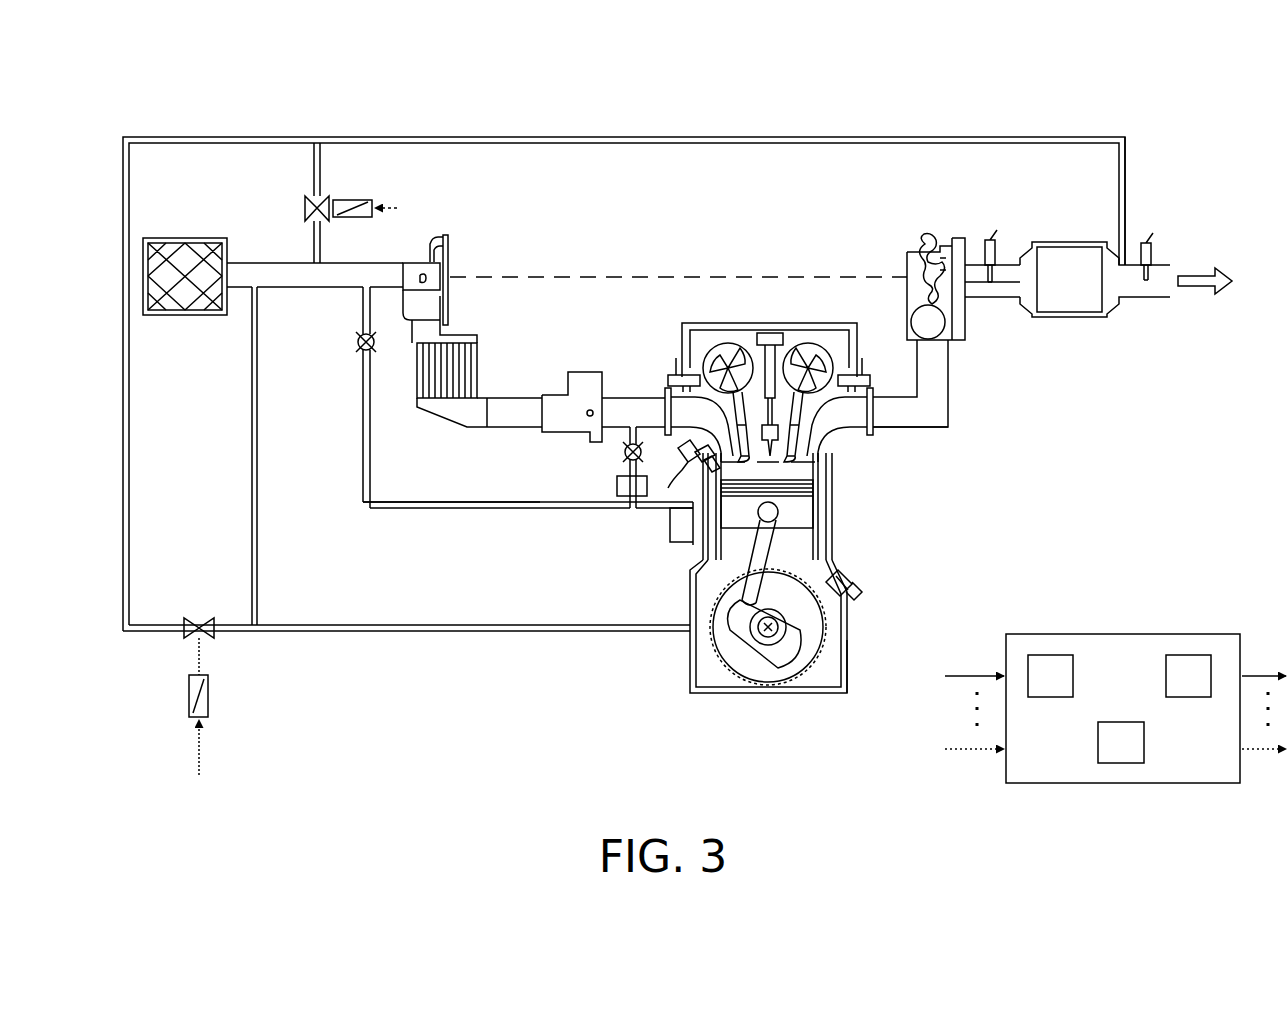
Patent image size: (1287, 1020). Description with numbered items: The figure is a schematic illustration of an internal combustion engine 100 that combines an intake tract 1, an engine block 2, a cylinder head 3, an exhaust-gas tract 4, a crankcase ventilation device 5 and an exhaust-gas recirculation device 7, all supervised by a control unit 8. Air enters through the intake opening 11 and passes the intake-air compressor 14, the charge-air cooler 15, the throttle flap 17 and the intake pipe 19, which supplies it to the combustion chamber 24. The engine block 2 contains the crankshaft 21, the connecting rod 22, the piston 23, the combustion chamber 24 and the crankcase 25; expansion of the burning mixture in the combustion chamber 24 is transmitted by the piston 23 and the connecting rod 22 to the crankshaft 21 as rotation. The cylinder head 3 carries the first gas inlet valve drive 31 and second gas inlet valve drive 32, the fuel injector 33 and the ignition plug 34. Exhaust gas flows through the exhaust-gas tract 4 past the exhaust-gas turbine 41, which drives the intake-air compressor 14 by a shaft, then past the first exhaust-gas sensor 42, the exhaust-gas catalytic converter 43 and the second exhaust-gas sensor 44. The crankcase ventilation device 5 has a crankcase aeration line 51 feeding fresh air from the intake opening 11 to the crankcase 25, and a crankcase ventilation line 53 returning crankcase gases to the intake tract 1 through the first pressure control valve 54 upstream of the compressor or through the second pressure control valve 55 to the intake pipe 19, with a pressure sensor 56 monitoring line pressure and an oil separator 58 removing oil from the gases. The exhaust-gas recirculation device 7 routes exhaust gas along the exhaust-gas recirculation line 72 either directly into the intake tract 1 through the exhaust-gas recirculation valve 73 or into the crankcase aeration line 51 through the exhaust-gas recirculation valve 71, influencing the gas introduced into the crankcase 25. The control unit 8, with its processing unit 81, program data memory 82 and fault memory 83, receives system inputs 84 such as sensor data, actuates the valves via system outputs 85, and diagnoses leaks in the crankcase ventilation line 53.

The intake tract 1 is at (266, 244).
The engine block 2 is at (956, 566).
The cylinder head 3 is at (728, 300).
The exhaust-gas tract 4 is at (1003, 340).
The crankcase ventilation device 5 is at (543, 556).
The exhaust-gas recirculation device 7 is at (931, 130).
The control unit 8 is at (1158, 634).
The intake opening 11 is at (186, 238).
The intake-air compressor 14 is at (448, 247).
The charge-air cooler 15 is at (477, 368).
The throttle flap 17 is at (578, 372).
The intake pipe 19 is at (622, 397).
The crankshaft 21 is at (825, 660).
The connecting rod 22 is at (772, 530).
The piston 23 is at (827, 496).
The combustion chamber 24 is at (812, 474).
The crankcase 25 is at (850, 562).
The first gas inlet valve drive 31 is at (712, 350).
The second gas inlet valve drive 32 is at (822, 350).
The fuel injector 33 is at (676, 470).
The ignition plug 34 is at (766, 333).
The exhaust-gas turbine 41 is at (931, 240).
The first exhaust-gas sensor 42 is at (990, 232).
The exhaust-gas catalytic converter 43 is at (1068, 242).
The second exhaust-gas sensor 44 is at (1145, 233).
The crankcase aeration line 51 is at (252, 443).
The crankcase ventilation line 53 is at (568, 508).
The first pressure control valve 54 is at (358, 342).
The second pressure control valve 55 is at (622, 452).
The pressure sensor 56 is at (618, 496).
The oil separator 58 is at (671, 542).
The exhaust-gas recirculation valve to the crankcase aeration line 71 is at (184, 636).
The exhaust-gas recirculation line 72 is at (643, 137).
The exhaust-gas recirculation valve to the intake tract 73 is at (323, 200).
The processing unit 81 is at (1118, 722).
The program data memory 82 is at (1052, 655).
The fault memory 83 is at (1188, 655).
The system inputs 84 is at (971, 674).
The system outputs 85 is at (1268, 674).
The internal combustion engine 100 is at (940, 452).